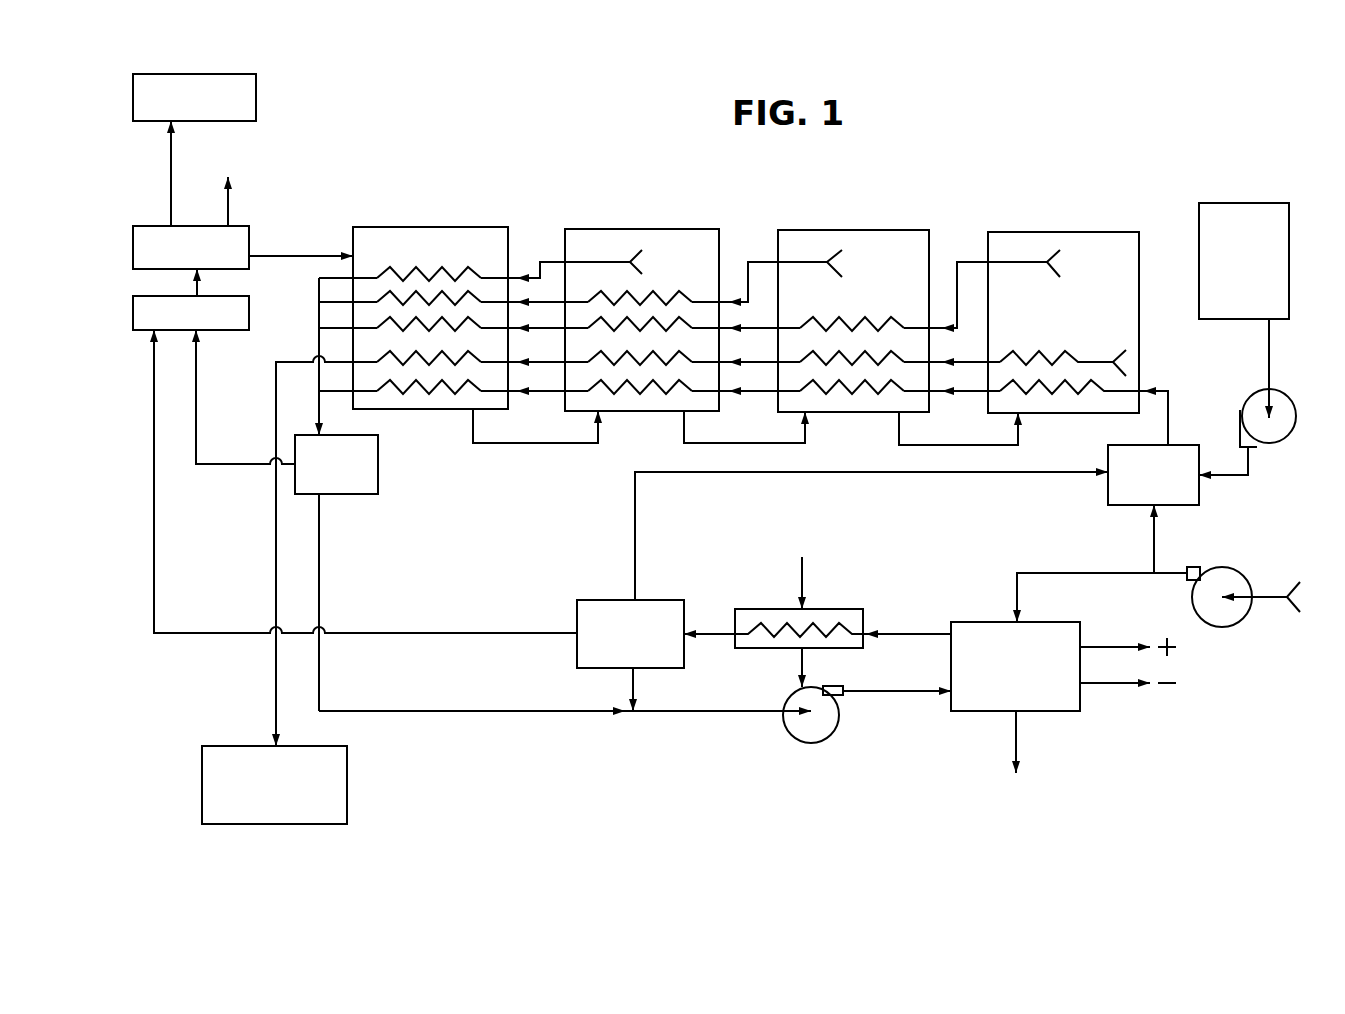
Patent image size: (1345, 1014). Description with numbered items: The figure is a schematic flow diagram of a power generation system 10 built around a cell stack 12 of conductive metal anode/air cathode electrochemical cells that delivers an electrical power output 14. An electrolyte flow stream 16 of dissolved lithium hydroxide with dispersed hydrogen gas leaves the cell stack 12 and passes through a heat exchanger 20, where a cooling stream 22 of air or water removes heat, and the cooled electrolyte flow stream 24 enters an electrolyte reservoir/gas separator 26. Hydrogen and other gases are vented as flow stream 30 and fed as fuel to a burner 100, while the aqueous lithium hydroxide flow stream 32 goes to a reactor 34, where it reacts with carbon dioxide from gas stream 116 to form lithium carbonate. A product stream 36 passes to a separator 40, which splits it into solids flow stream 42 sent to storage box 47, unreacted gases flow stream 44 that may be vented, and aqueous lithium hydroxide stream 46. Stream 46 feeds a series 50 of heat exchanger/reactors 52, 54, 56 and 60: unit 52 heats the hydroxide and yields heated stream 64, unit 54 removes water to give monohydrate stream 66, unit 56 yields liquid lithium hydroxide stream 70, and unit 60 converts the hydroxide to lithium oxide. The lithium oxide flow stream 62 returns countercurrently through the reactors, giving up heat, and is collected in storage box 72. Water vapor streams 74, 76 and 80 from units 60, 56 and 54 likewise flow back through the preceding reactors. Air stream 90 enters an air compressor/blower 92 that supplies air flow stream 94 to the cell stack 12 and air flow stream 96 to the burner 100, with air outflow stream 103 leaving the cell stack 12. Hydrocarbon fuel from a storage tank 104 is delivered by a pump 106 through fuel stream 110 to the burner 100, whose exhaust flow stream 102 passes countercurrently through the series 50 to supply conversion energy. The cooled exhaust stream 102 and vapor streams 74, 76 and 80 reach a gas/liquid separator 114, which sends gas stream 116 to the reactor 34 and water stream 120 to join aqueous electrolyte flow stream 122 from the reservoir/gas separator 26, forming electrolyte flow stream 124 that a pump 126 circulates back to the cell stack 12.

The power generation system 10 is at (1155, 163).
The cell stack 12 is at (1030, 675).
The electrical power output 14 is at (1128, 662).
The electrolyte flow stream 16 is at (910, 634).
The heat exchanger 20 is at (847, 609).
The cooling stream 22 is at (802, 576).
The cooled electrolyte flow stream 24 is at (714, 628).
The electrolyte reservoir/gas separator 26 is at (644, 644).
The hydrogen gas flow stream 30 is at (682, 472).
The aqueous lithium hydroxide flow stream 32 is at (446, 633).
The reactor 34 is at (204, 326).
The product stream 36 is at (197, 287).
The separator 40 is at (204, 260).
The solids flow stream 42 is at (171, 182).
The unreacted gases flow stream 44 is at (228, 205).
The aqueous lithium hydroxide stream 46 is at (298, 255).
The storage box 47 is at (209, 107).
The series of heat exchangers/reactors 50 is at (750, 220).
The heat exchanger/reactor 52 is at (397, 227).
The heat exchanger/reactor 54 is at (598, 229).
The heat exchanger/reactor 56 is at (853, 230).
The heat exchanger/reactor 60 is at (1037, 232).
The lithium oxide flow stream 62 is at (296, 356).
The heated lithium hydroxide flow stream 64 is at (530, 443).
The monohydrate lithium hydroxide stream 66 is at (710, 443).
The liquid lithium hydroxide stream 70 is at (927, 446).
The storage box 72 is at (288, 796).
The water vapor flow stream 74 is at (335, 328).
The water vapor flow stream 76 is at (333, 301).
The water vapor flow stream 80 is at (333, 278).
The air stream 90 is at (1167, 573).
The air compressor/blower 92 is at (1230, 567).
The air flow stream 94 is at (1058, 573).
The air flow stream 96 is at (1152, 533).
The burner 100 is at (1174, 486).
The exhaust flow stream 102 is at (338, 392).
The air outflow stream 103 is at (1016, 745).
The storage tank 104 is at (1265, 273).
The pump 106 is at (1293, 425).
The fuel stream 110 is at (1270, 362).
The gas/liquid separator 114 is at (356, 473).
The gas stream 116 is at (236, 464).
The water stream 120 is at (319, 568).
The aqueous electrolyte flow stream 122 is at (633, 686).
The electrolyte flow stream 124 is at (725, 711).
The pump 126 is at (813, 733).